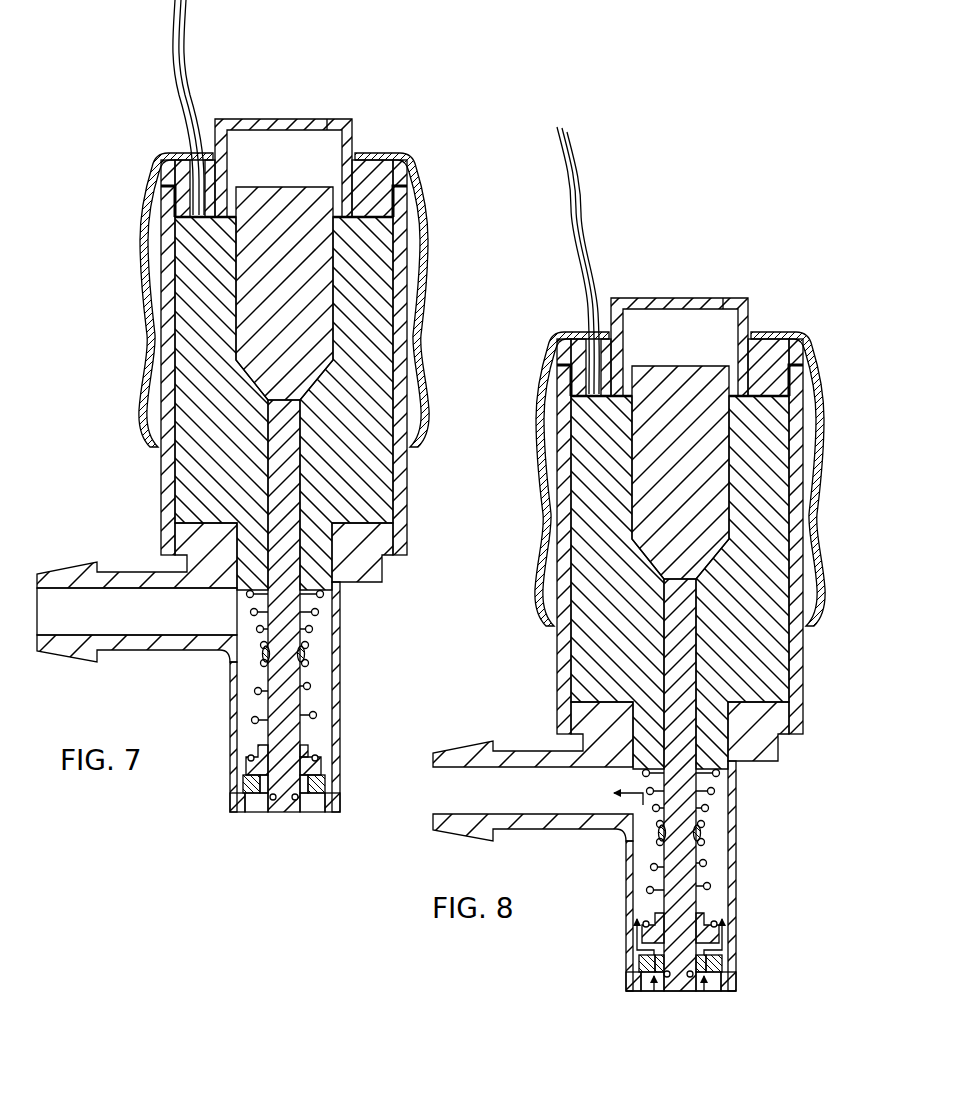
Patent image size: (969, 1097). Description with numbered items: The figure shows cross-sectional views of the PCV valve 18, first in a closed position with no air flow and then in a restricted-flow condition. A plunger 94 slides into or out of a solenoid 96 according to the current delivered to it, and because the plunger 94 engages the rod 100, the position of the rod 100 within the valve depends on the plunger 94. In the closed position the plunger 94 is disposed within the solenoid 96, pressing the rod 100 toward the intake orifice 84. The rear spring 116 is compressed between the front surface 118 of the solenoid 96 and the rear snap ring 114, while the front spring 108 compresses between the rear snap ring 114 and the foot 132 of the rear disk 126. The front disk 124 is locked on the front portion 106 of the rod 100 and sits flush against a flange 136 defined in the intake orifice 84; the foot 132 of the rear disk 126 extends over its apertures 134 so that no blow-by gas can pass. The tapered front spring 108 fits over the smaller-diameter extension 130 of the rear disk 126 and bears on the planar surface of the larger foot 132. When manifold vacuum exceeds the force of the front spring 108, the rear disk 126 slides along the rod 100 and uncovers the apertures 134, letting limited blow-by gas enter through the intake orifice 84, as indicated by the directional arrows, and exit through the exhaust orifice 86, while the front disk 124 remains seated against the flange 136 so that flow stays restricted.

In FIG. 7, the PCV valve 18 is at (103, 97).
In FIG. 8, the PCV valve 18 is at (484, 563).
In FIG. 7, the intake orifice 84 is at (303, 807).
In FIG. 8, the intake orifice 84 is at (663, 997).
In FIG. 8, the exhaust orifice 86 is at (622, 774).
In FIG. 7, the plunger 94 is at (293, 190).
In FIG. 8, the plunger 94 is at (680, 441).
In FIG. 7, the solenoid 96 is at (362, 340).
In FIG. 8, the solenoid 96 is at (376, 384).
In FIG. 7, the rod 100 is at (175, 340).
In FIG. 8, the rod 100 is at (287, 811).
In FIG. 7, the front portion 106 is at (283, 492).
In FIG. 8, the front portion 106 is at (284, 486).
In FIG. 7, the front spring 108 is at (307, 687).
In FIG. 8, the front spring 108 is at (679, 875).
In FIG. 7, the rear snap ring 114 is at (307, 653).
In FIG. 7, the rear spring 116 is at (322, 592).
In FIG. 7, the front surface 118 is at (237, 587).
In FIG. 7, the front disk 124 is at (255, 785).
In FIG. 8, the front disk 124 is at (719, 968).
In FIG. 7, the rear disk 126 is at (262, 766).
In FIG. 8, the rear disk 126 is at (319, 751).
In FIG. 7, the extension 130 is at (310, 748).
In FIG. 7, the foot 132 is at (322, 763).
In FIG. 7, the apertures 134 is at (310, 785).
In FIG. 8, the apertures 134 is at (678, 989).
In FIG. 7, the flange 136 is at (243, 807).
In FIG. 8, the flange 136 is at (687, 990).